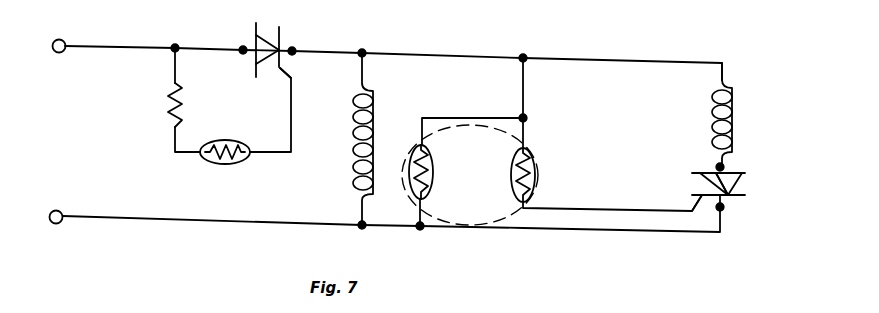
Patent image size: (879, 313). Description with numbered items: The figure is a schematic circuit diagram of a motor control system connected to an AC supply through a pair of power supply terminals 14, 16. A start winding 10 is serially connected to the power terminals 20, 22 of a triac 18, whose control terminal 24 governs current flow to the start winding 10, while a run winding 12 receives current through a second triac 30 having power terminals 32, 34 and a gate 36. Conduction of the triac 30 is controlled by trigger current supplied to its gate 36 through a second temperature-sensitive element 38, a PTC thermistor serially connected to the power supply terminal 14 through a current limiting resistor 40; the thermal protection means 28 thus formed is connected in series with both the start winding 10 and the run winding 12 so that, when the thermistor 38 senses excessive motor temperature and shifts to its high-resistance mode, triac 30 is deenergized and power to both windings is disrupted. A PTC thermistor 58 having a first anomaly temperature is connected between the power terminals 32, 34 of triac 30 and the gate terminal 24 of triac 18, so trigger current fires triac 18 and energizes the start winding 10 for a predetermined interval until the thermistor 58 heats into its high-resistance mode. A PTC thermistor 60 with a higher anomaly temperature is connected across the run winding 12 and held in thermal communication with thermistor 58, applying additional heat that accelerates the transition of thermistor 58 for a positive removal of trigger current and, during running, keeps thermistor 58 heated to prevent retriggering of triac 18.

The start winding 10 is at (733, 116).
The run winding 12 is at (375, 104).
The power supply terminal 14 is at (61, 40).
The power supply terminal 16 is at (56, 210).
The current switch means 18 is at (742, 179).
The power terminal 20 is at (724, 166).
The power terminal 22 is at (724, 208).
The control terminal 24 is at (690, 202).
The thermal protection means 28 is at (245, 111).
The triac 30 is at (257, 32).
The power terminal 32 is at (243, 49).
The power terminal 34 is at (293, 47).
The gate 36 is at (286, 69).
The second temperature-sensitive element 38 is at (228, 164).
The current limiting resistor 40 is at (170, 105).
The PTC thermistor 58 is at (511, 189).
The PTC thermistor 60 is at (425, 151).